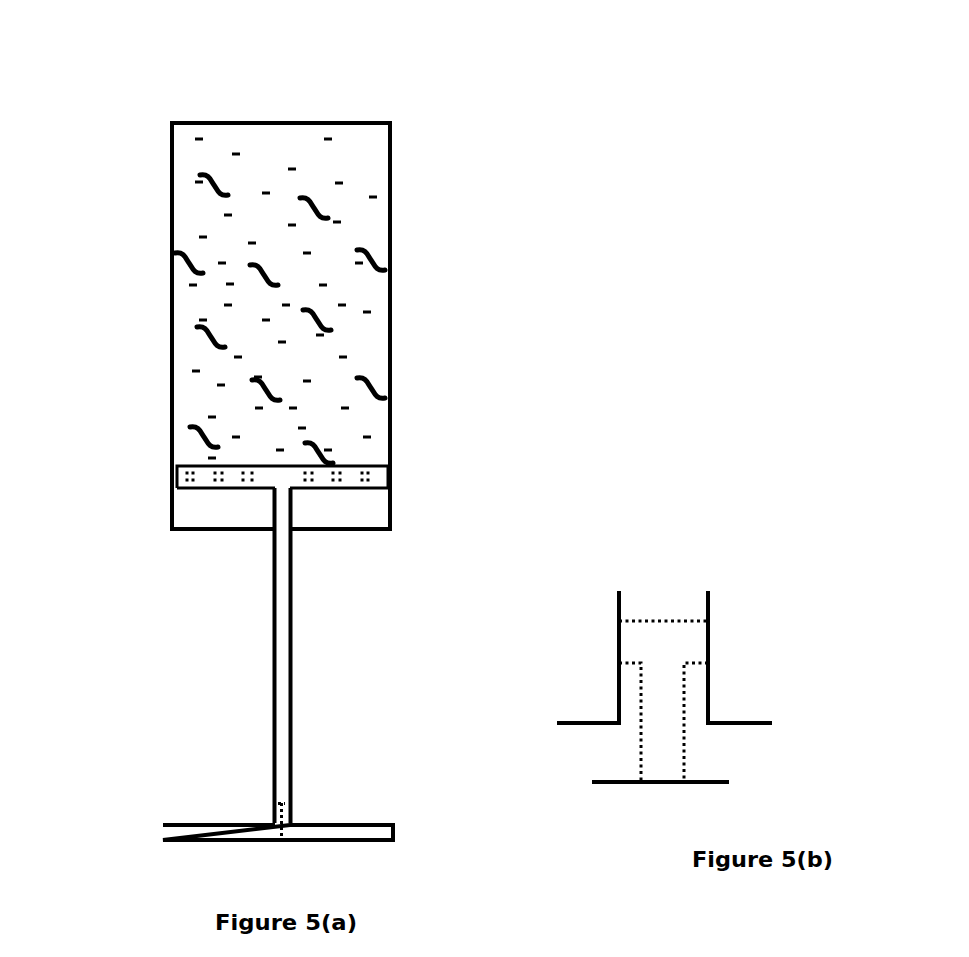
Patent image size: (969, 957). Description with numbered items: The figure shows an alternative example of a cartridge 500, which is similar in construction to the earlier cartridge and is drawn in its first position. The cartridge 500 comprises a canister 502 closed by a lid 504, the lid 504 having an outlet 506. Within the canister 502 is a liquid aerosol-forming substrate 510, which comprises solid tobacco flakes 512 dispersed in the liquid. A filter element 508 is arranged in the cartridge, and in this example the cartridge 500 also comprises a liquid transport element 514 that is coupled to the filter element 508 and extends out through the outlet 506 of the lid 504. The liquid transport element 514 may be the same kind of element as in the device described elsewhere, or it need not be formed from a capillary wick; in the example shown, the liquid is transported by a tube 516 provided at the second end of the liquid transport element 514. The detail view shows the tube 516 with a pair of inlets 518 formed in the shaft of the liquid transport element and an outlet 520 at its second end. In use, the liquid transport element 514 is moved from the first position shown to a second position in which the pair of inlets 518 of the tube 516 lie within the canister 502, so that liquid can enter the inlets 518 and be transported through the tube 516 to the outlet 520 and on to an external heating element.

In FIG. 5A, the cartridge 500 is at (442, 140).
In FIG. 5A, the canister 502 is at (170, 178).
In FIG. 5A, the lid 504 is at (190, 532).
In FIG. 5A, the outlet 506 is at (270, 532).
In FIG. 5A, the filter element 508 is at (392, 462).
In FIG. 5A, the liquid aerosol-forming substrate 510 is at (368, 350).
In FIG. 5A, the solid tobacco flakes 512 is at (382, 262).
In FIG. 5A, the liquid transport element 514 is at (282, 683).
In FIG. 5A, the tube 516 is at (292, 808).
In FIG. 5B, the inlets 518 is at (690, 645).
In FIG. 5B, the outlet 520 is at (673, 772).